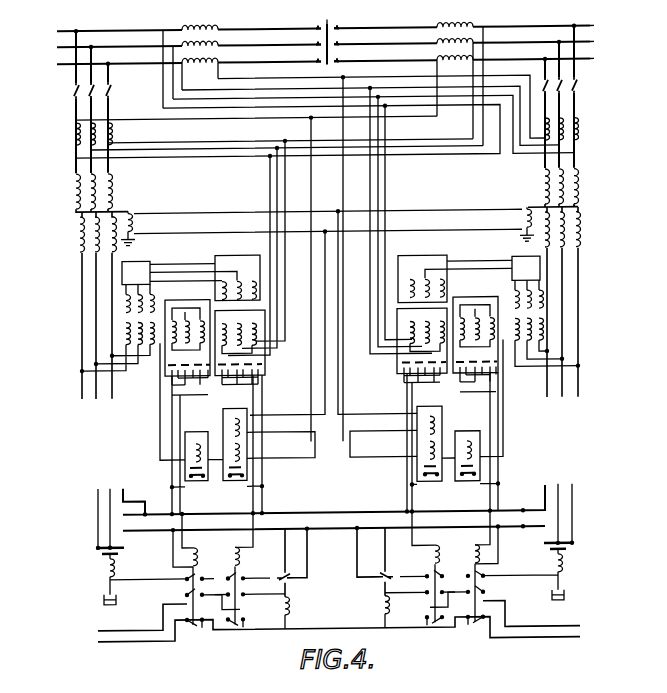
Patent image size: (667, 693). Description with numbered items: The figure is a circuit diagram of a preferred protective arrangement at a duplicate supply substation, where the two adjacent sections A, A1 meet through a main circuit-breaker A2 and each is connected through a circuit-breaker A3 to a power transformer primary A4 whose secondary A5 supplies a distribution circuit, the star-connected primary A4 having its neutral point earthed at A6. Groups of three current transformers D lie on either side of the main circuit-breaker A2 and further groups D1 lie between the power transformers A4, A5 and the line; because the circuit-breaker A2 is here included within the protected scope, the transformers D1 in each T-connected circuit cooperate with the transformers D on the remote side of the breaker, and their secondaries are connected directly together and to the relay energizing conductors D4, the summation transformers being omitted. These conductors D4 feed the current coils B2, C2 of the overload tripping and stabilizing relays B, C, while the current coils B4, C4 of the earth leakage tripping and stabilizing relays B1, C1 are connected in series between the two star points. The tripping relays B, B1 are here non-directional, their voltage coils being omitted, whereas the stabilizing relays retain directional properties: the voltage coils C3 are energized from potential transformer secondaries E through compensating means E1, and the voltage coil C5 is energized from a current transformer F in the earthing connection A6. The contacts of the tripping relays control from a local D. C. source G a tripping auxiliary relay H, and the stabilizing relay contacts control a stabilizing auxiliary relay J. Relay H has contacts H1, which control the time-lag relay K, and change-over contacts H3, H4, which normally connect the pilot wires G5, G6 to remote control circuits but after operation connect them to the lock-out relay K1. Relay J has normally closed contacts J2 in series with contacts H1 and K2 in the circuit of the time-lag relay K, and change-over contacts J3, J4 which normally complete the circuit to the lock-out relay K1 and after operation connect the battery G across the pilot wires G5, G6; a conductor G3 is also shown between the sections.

The section A is at (590, 65).
The adjacent section A1 is at (57, 65).
The main circuit-breaker A2 is at (337, 29).
The circuit-breaker A3 is at (578, 92).
The power transformer primary A4 is at (580, 188).
The power transformer secondary A5 is at (582, 233).
The earthing connection A6 is at (510, 250).
The overload tripping relays B is at (488, 368).
The earth leakage tripping relay B1 is at (480, 442).
The current coils of overload tripping relays B2 is at (491, 321).
The current coil of earth leakage tripping relay B4 is at (470, 460).
The overload stabilizing relays C is at (378, 379).
The earth leakage stabilizing relay C1 is at (425, 477).
The current coils of overload stabilizing relays C2 is at (442, 343).
The voltage coils of overload stabilizing relays C3 is at (440, 284).
The current coil of earth leakage stabilizing relay C4 is at (432, 454).
The voltage coil of earth leakage stabilizing relay C5 is at (428, 430).
The current transformers D is at (457, 19).
The current transformers D1 is at (580, 136).
The relay energizing conductors D4 is at (376, 196).
The potential transformer secondaries E is at (540, 304).
The compensating means E1 is at (540, 273).
The current transformer F is at (500, 204).
The local D. C. source G is at (340, 516).
The conductor G3 is at (308, 12).
The pilot wire G5 is at (565, 632).
The pilot wire G6 is at (578, 654).
The tripping auxiliary relay H is at (473, 550).
The contacts of tripping auxiliary relay H1 is at (484, 590).
The change-over contacts of tripping auxiliary relay H3 is at (485, 608).
The change-over contacts of tripping auxiliary relay H4 is at (477, 628).
The stabilizing auxiliary relay J is at (438, 556).
The normally closed contacts of stabilizing auxiliary relay J2 is at (440, 578).
The change-over contacts of stabilizing auxiliary relay J3 is at (424, 596).
The change-over contacts of stabilizing auxiliary relay J4 is at (430, 630).
The time-lag relay K is at (566, 572).
The lock-out relay K1 is at (380, 615).
The contacts K2 is at (384, 575).